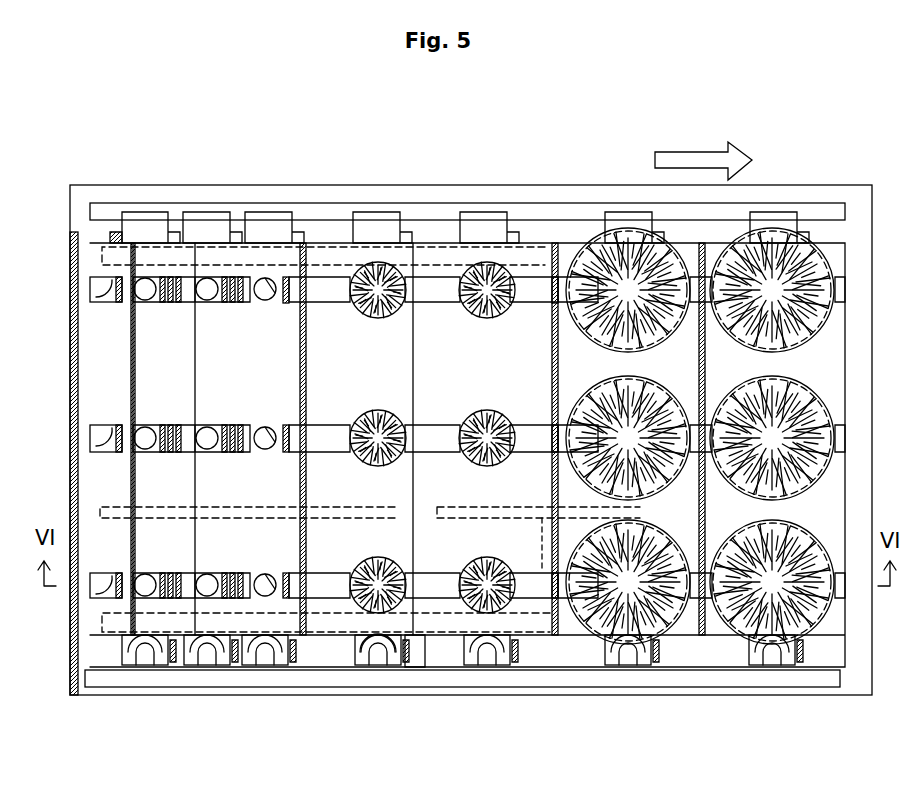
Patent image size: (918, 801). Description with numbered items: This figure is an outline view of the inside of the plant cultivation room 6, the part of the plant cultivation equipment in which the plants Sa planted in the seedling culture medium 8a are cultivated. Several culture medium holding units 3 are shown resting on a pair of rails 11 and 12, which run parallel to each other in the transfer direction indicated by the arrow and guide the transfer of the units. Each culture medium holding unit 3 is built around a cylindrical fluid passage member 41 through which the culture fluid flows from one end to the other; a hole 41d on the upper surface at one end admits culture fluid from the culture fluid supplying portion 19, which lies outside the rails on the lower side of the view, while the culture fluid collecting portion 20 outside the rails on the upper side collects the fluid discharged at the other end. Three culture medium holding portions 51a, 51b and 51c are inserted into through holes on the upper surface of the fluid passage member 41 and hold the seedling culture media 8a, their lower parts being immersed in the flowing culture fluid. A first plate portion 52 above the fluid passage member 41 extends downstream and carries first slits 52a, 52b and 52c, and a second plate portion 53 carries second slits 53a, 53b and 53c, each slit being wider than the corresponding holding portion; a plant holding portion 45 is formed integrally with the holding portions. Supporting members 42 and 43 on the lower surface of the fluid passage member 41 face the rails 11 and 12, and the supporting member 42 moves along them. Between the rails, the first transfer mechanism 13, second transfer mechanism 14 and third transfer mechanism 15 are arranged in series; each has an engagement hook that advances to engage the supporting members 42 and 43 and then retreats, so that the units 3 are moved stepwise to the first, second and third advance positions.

The plant cultivation room 6 is at (780, 120).
The plant holding portion 45 is at (78, 240).
The culture fluid collecting portion 20 is at (833, 203).
The culture fluid supplying portion 19 is at (813, 687).
The rail 11 is at (704, 640).
The culture medium holding unit 3 is at (142, 212).
The supporting member 43 is at (410, 243).
The rail 12 is at (438, 243).
The culture medium holding portion 51c is at (284, 278).
The culture medium holding portion 51b is at (305, 428).
The culture medium holding portion 51a is at (288, 598).
The first slit 52c is at (549, 282).
The first slit 52b is at (554, 428).
The first slit 52a is at (548, 597).
The first plate portion 52 is at (527, 600).
The third transfer mechanism 15 is at (555, 600).
The second transfer mechanism 14 is at (322, 570).
The first transfer mechanism 13 is at (100, 512).
The second slit 53c is at (93, 290).
The second slit 53b is at (93, 440).
The second slit 53a is at (92, 590).
The second plate portion 53 is at (96, 399).
The seedling culture medium 8a is at (145, 296).
The plant Sa is at (191, 599).
The fluid passage member 41 is at (242, 657).
The hole 41d is at (399, 648).
The supporting member 42 is at (415, 643).